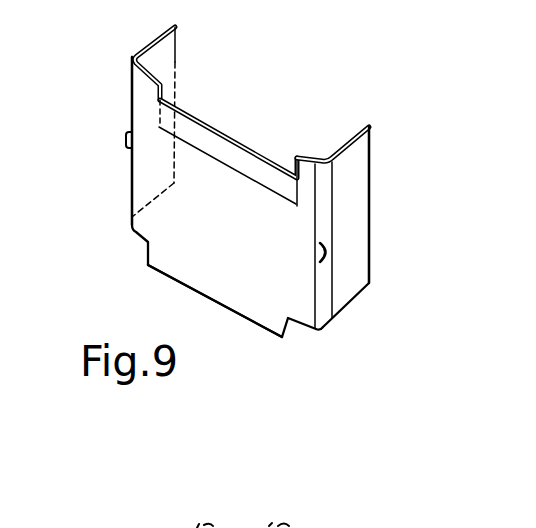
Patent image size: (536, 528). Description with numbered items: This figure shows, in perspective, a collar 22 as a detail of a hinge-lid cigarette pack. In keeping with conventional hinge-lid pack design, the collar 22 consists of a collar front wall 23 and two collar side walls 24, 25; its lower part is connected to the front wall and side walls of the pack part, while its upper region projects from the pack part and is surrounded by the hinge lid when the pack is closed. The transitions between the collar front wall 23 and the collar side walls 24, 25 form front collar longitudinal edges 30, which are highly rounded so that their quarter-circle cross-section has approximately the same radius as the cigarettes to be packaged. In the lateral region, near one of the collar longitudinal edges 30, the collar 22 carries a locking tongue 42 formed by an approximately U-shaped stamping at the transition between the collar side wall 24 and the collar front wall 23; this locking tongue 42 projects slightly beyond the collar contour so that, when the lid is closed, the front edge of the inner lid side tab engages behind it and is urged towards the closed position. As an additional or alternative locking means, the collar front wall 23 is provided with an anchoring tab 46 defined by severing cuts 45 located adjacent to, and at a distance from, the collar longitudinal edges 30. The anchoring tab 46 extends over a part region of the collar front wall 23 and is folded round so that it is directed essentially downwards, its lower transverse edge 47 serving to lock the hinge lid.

The collar 22 is at (126, 241).
The collar front wall 23 is at (247, 258).
The collar side wall 24 is at (162, 57).
The collar side wall 25 is at (358, 214).
The front collar longitudinal edge 30 is at (132, 86).
The locking tongue 42 is at (126, 140).
The severing cut 45 is at (300, 186).
The anchoring tab 46 is at (203, 141).
The lower transverse edge 47 is at (255, 181).